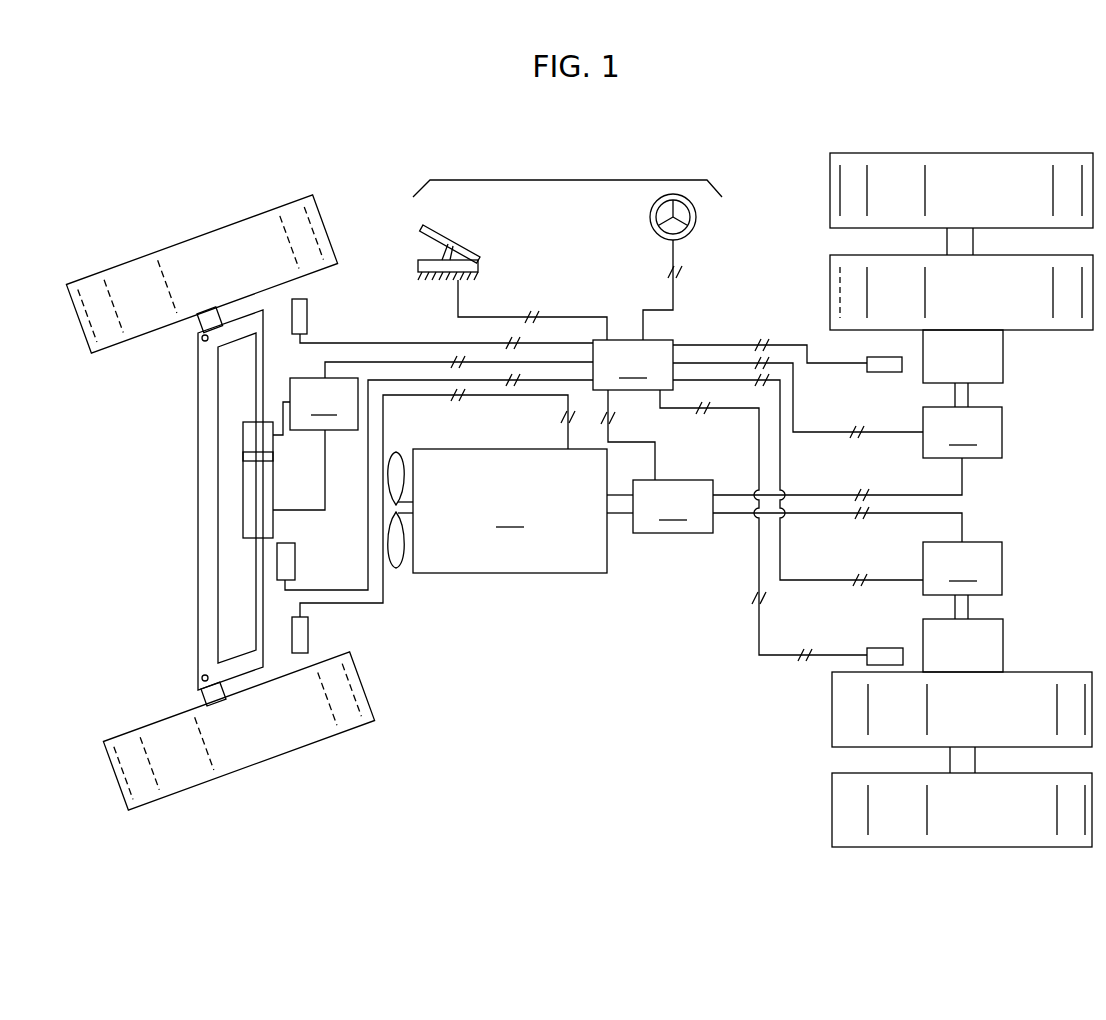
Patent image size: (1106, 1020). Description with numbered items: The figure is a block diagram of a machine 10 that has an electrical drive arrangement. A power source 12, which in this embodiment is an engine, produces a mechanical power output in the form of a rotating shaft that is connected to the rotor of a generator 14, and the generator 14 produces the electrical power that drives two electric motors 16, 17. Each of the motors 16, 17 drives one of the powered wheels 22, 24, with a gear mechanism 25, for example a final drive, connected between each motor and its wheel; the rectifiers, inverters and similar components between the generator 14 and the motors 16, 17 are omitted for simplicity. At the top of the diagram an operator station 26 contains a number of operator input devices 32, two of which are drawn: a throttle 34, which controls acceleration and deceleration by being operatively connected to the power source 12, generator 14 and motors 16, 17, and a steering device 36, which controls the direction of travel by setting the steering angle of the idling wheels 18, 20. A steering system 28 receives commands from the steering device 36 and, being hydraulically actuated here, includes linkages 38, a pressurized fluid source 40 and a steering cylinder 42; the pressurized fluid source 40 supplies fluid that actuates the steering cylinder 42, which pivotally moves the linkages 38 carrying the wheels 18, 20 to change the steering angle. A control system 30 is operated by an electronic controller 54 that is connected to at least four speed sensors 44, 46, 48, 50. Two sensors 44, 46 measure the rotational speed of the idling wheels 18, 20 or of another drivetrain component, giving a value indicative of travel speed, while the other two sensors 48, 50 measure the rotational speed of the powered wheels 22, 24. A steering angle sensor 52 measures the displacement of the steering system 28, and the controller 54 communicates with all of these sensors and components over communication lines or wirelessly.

The machine 10 is at (856, 94).
The power source 12 is at (510, 511).
The generator 14 is at (797, 500).
The motor 16 is at (962, 432).
The motor 17 is at (962, 568).
The wheel 18 is at (233, 770).
The wheel 20 is at (197, 230).
The wheel 22 is at (1010, 153).
The wheel 24 is at (832, 812).
The gear mechanism 25 is at (1003, 372).
The operator station 26 is at (726, 205).
The steering system 28 is at (168, 565).
The control system 30 is at (630, 597).
The operator input devices 32 is at (572, 180).
The throttle 34 is at (458, 243).
The steering device 36 is at (696, 228).
The linkages 38 is at (176, 437).
The pressurized fluid source 40 is at (433, 433).
The steering cylinder 42 is at (243, 426).
The speed sensor 44 is at (308, 631).
The speed sensor 46 is at (308, 315).
The speed sensor 48 is at (868, 372).
The speed sensor 50 is at (866, 655).
The steering angle sensor 52 is at (295, 553).
The electronic controller 54 is at (758, 500).